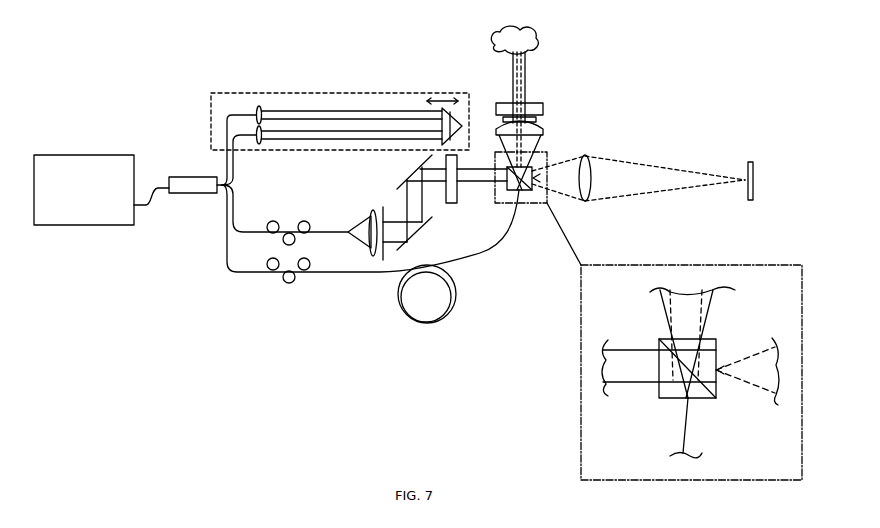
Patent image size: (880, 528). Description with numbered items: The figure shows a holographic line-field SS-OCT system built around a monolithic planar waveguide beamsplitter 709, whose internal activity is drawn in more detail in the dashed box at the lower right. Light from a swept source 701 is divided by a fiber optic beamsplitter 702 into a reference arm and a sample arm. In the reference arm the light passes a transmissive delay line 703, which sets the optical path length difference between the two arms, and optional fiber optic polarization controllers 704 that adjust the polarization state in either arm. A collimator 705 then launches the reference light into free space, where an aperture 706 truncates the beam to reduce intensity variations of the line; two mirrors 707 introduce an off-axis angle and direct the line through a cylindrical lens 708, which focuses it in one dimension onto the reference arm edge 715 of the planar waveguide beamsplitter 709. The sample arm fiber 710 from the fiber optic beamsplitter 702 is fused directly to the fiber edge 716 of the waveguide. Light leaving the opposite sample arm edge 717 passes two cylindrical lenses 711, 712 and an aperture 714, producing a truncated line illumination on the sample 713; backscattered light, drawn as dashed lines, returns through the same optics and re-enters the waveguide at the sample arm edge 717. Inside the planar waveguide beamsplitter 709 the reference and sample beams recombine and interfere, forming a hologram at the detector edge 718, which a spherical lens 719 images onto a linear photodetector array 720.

The swept source 701 is at (93, 228).
The fiber optic beamsplitter 702 is at (193, 172).
The transmissive delay line 703 is at (232, 90).
The fiber optic polarization controllers 704 is at (290, 220).
The collimator 705 is at (369, 213).
The aperture 706 is at (384, 208).
The mirrors 707 is at (402, 178).
The cylindrical lens 708 is at (452, 205).
The planar waveguide beamsplitter 709 is at (521, 192).
The sample arm fiber 710 is at (517, 252).
The cylindrical lens 711 is at (548, 130).
The cylindrical lens 712 is at (545, 104).
The sample 713 is at (540, 43).
The aperture 714 is at (540, 117).
The reference arm edge 715 is at (655, 388).
The fiber edge 716 is at (672, 402).
The sample arm edge 717 is at (665, 335).
The detector edge 718 is at (718, 380).
The spherical lens 719 is at (588, 208).
The linear photodetector array 720 is at (748, 207).